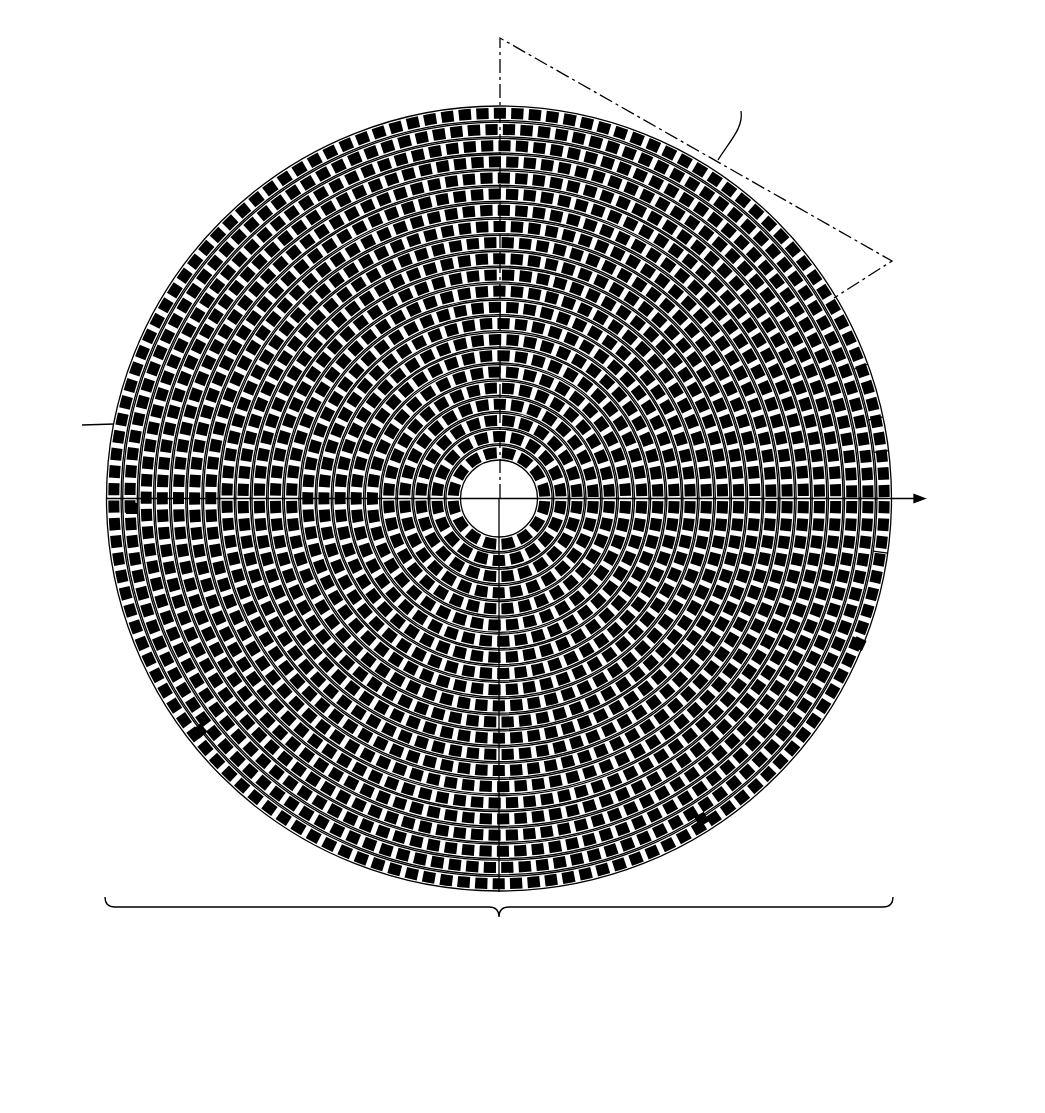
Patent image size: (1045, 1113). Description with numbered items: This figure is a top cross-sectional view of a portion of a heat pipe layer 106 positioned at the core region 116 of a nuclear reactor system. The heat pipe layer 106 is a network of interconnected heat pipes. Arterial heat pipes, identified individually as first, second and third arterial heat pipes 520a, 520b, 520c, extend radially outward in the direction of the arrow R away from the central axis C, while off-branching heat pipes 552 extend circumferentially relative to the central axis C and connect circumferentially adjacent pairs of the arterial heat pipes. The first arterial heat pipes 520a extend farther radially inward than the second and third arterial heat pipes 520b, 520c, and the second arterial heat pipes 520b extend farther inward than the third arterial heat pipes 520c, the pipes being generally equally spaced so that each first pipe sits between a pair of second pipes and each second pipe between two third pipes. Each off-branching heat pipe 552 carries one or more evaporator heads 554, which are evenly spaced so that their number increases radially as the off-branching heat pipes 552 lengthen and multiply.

The heat pipe layer 106 is at (214, 140).
The off-branching heat pipes 552 is at (160, 277).
The evaporator heads 554 is at (850, 365).
The first arterial heat pipes 520a is at (122, 492).
The second arterial heat pipes 520b is at (836, 696).
The third arterial heat pipes 520c is at (257, 797).
The core region 116 is at (499, 928).